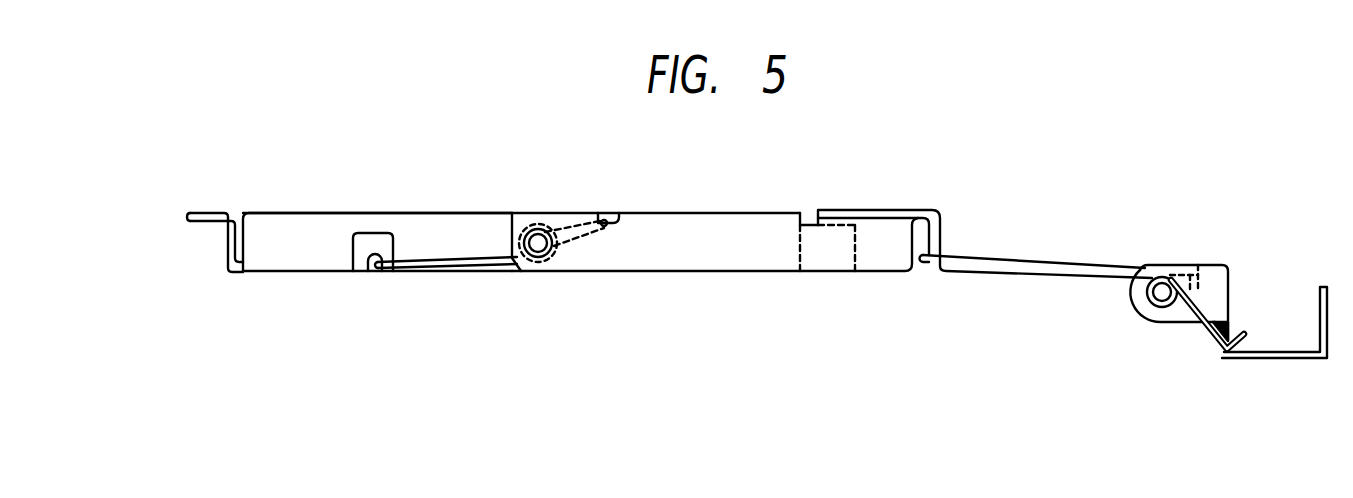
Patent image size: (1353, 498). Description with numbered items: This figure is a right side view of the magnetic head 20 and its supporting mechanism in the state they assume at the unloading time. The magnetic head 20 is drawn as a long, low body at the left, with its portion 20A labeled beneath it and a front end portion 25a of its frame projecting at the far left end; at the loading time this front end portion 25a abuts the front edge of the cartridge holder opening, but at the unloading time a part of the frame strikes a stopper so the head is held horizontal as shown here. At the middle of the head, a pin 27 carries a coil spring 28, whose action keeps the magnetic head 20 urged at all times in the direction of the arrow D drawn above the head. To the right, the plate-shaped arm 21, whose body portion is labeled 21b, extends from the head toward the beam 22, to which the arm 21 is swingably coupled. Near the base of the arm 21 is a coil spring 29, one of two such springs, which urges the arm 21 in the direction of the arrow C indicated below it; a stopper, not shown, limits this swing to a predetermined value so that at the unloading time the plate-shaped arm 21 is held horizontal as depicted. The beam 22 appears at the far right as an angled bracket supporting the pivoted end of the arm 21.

The magnetic head 20 is at (459, 190).
The holder base plate 20A is at (282, 265).
The plate-shaped arm 21 is at (900, 210).
The slider body 21b is at (725, 222).
The beam 22 is at (1281, 362).
The front end portion 25a is at (197, 222).
The pin 27 is at (537, 247).
The coil spring 28 is at (559, 254).
The coil spring 29 is at (1152, 308).
The arrow D is at (371, 190).
The arrow C is at (1012, 298).